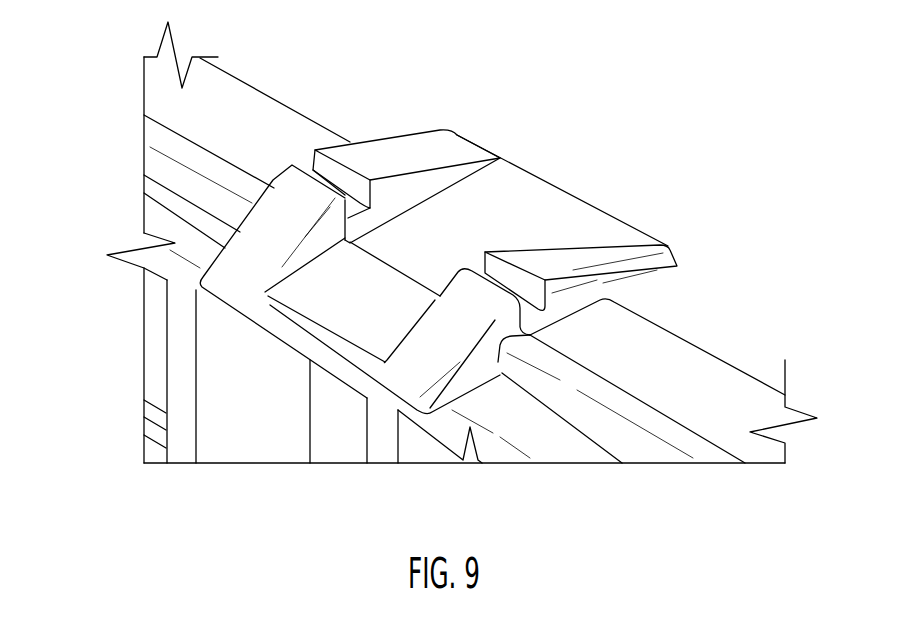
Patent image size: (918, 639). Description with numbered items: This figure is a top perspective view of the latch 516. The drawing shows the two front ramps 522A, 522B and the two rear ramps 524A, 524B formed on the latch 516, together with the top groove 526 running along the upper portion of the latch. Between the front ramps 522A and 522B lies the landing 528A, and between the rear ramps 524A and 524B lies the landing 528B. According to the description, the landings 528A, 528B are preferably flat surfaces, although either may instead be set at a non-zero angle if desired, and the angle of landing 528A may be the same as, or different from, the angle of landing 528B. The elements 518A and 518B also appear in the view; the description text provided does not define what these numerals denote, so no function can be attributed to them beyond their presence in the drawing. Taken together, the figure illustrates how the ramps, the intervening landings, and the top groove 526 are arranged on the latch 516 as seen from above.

The latch 516 is at (576, 150).
The first frame member 518A is at (263, 138).
The second frame member 518B is at (687, 368).
The front ramp 522A is at (248, 250).
The front ramp 522B is at (458, 320).
The rear ramp 524A is at (420, 147).
The rear ramp 524B is at (612, 250).
The top groove 526 is at (463, 251).
The landing 528A is at (332, 315).
The landing 528B is at (553, 223).